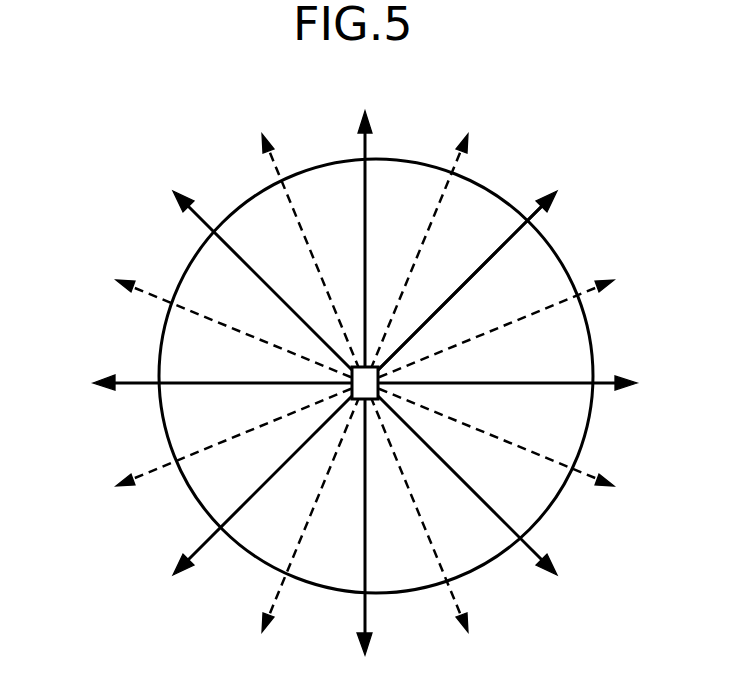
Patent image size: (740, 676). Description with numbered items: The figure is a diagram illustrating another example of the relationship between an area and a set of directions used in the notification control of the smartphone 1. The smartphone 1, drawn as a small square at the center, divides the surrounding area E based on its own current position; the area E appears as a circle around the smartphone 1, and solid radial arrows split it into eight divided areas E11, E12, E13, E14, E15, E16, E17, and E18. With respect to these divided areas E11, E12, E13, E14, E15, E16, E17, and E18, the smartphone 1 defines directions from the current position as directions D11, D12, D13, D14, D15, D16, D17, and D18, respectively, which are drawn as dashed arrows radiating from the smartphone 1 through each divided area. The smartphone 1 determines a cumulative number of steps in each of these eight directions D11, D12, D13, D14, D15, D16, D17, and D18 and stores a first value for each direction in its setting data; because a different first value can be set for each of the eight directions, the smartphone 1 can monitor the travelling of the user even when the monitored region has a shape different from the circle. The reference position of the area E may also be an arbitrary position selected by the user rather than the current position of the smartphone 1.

The smartphone 1 is at (370, 366).
The area E is at (565, 217).
The divided area E11 is at (577, 342).
The divided area E12 is at (483, 203).
The divided area E13 is at (326, 182).
The divided area E14 is at (197, 283).
The divided area E15 is at (173, 413).
The divided area E16 is at (330, 580).
The divided area E17 is at (490, 540).
The divided area E18 is at (577, 414).
The direction D11 is at (558, 303).
The direction D12 is at (447, 186).
The direction D13 is at (293, 208).
The direction D14 is at (197, 313).
The direction D15 is at (217, 444).
The direction D16 is at (300, 537).
The direction D17 is at (435, 552).
The direction D18 is at (513, 445).